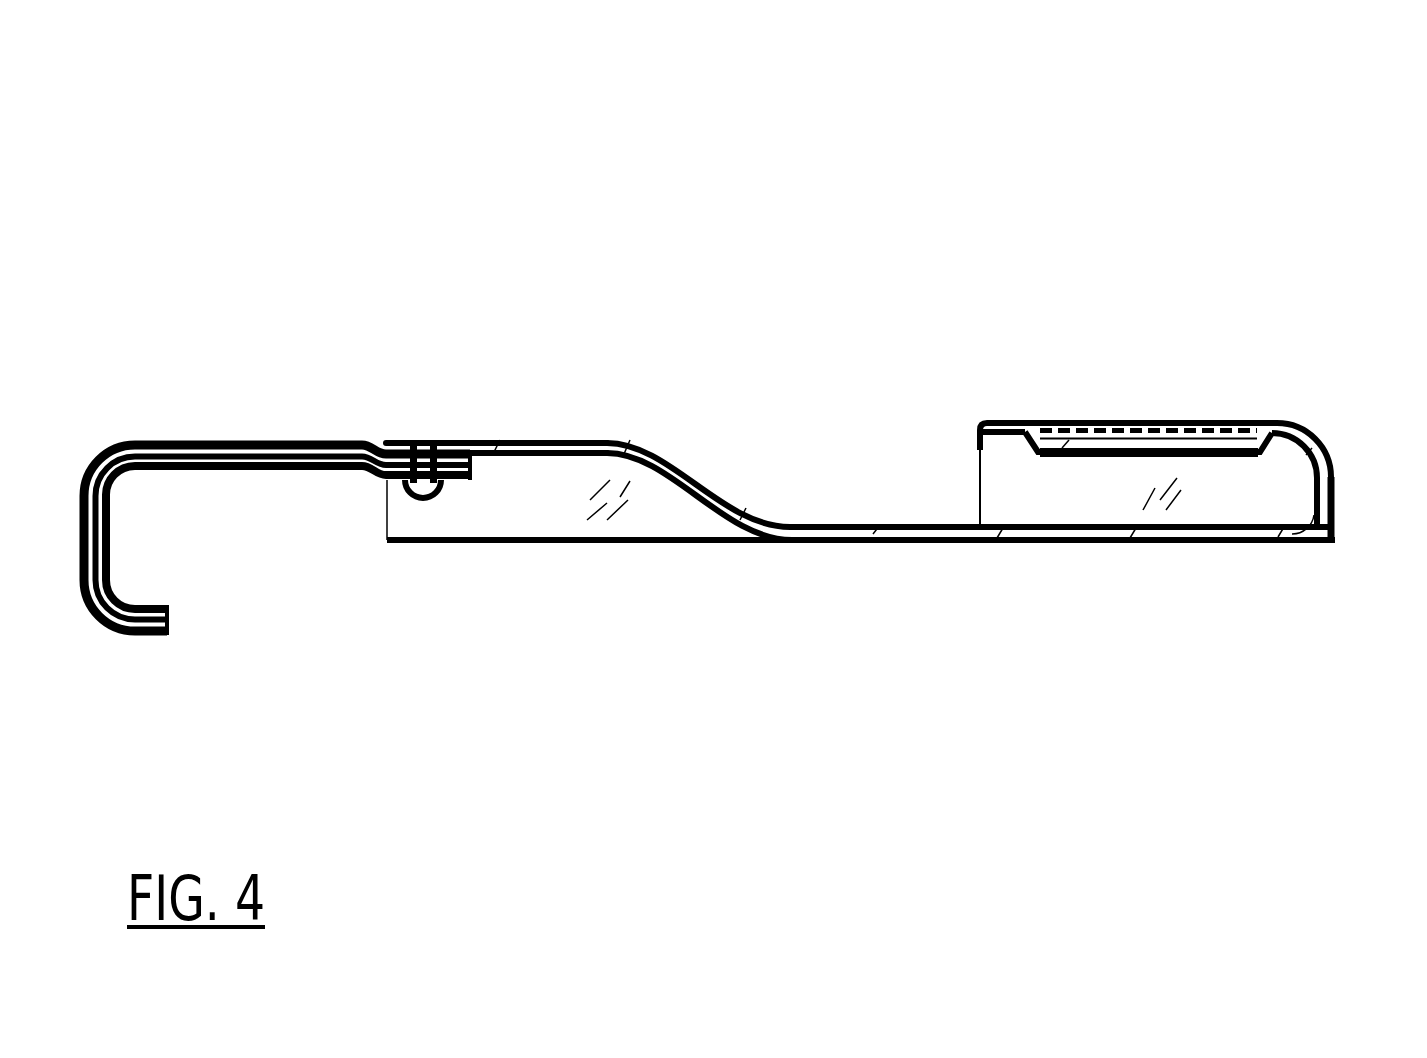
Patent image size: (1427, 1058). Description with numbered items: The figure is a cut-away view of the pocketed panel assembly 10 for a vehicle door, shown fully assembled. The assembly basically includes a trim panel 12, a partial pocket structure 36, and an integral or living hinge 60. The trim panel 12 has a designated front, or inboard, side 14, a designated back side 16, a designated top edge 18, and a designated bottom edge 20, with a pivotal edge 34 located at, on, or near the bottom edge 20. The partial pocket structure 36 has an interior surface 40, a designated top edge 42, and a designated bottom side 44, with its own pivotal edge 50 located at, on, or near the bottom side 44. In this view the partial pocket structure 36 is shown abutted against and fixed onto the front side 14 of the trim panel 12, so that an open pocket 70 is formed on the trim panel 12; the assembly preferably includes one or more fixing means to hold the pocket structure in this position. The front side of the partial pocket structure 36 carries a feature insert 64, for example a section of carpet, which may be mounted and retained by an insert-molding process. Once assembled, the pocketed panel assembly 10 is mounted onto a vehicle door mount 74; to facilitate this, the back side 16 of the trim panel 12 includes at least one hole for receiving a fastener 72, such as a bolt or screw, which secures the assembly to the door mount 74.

The pocketed panel assembly 10 is at (174, 124).
The trim panel 12 is at (534, 433).
The front side 14 is at (699, 459).
The back side 16 is at (828, 548).
The top edge 18 is at (388, 438).
The bottom edge 20 is at (1322, 560).
The pivotal edge 34 is at (1308, 512).
The partial pocket structure 36 is at (1292, 408).
The interior surface 40 is at (1082, 467).
The top edge 42 is at (978, 427).
The bottom side 44 is at (1345, 486).
The pivotal edge 50 is at (1345, 526).
The integral hinge 60 is at (1348, 554).
The feature insert 64 is at (1143, 419).
The open pocket 70 is at (968, 485).
The fastener 72 is at (433, 500).
The vehicle door mount 74 is at (175, 438).